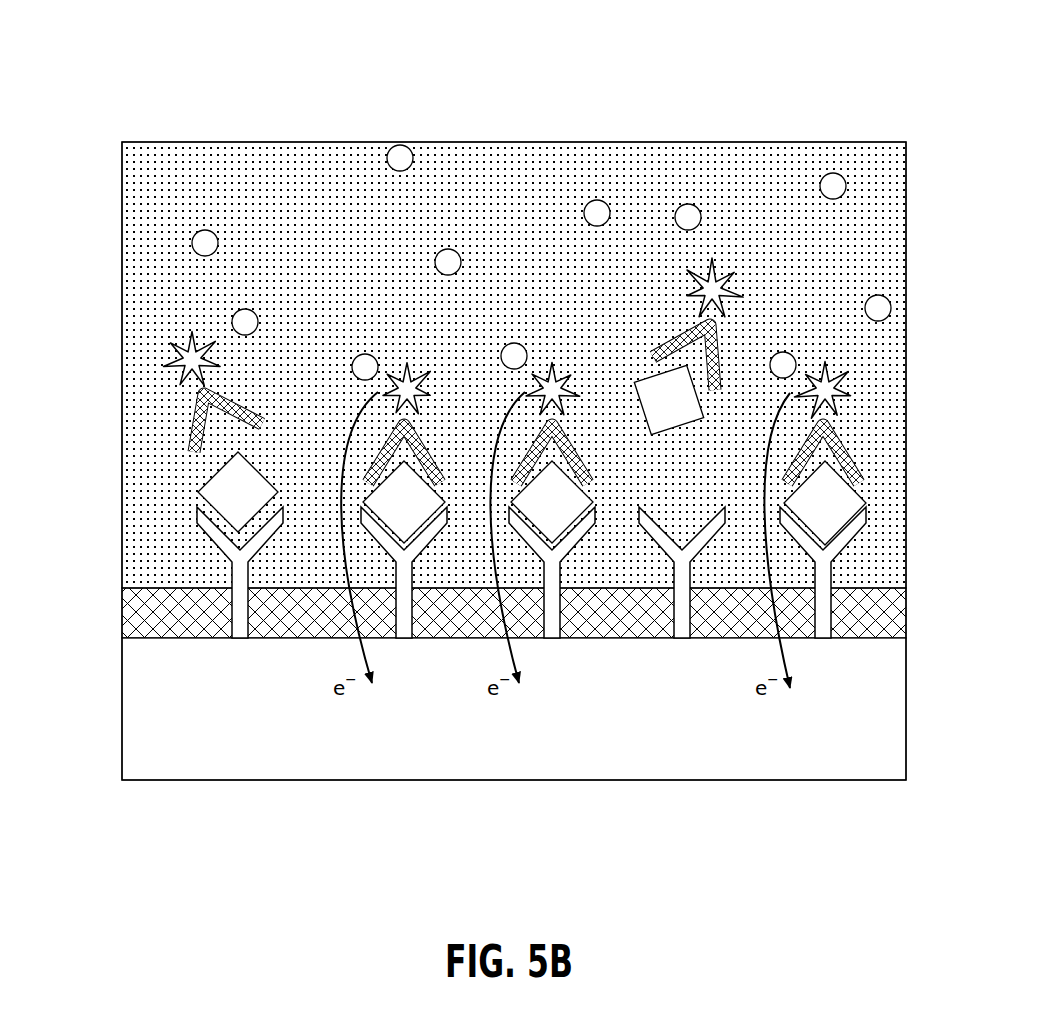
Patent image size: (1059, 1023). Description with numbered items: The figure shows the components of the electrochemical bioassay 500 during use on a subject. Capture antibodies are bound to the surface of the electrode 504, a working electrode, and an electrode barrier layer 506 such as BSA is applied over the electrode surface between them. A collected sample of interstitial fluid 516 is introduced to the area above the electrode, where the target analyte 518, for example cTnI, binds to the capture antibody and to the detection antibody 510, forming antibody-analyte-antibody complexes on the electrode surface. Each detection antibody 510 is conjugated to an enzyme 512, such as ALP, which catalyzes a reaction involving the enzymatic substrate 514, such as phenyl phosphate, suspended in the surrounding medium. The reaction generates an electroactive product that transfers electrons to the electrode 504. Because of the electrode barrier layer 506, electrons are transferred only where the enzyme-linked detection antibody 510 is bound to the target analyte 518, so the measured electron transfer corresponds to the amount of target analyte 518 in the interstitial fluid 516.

The electrochemical bioassay 500 is at (874, 67).
The electrode 504 is at (128, 740).
The electrode barrier layer 506 is at (123, 610).
The detection antibody 510 is at (187, 443).
The enzyme 512 is at (165, 352).
The enzymatic substrate 514 is at (389, 152).
The interstitial fluid 516 is at (650, 157).
The target analyte 518 is at (183, 480).